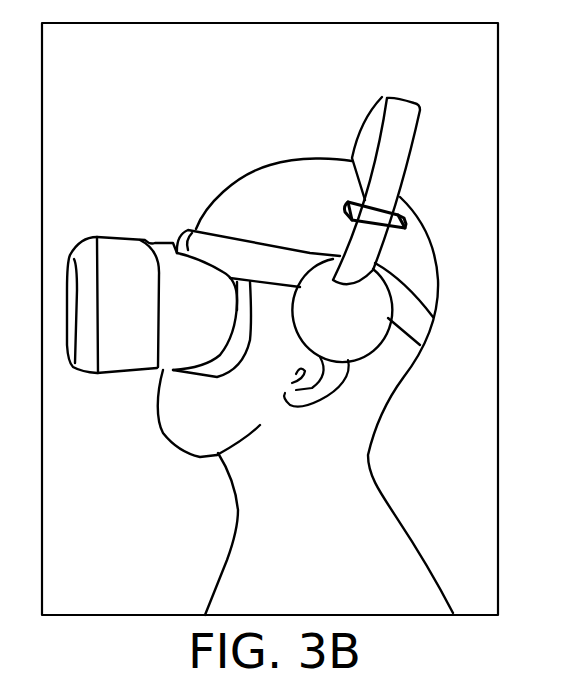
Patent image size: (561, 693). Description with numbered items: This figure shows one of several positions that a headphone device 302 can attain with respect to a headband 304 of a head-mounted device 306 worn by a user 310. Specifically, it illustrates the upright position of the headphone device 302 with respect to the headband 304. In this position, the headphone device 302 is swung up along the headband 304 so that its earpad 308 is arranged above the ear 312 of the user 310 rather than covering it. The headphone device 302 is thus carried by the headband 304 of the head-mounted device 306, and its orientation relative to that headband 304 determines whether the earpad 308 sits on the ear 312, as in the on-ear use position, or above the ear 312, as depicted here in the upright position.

The headphone device 302 is at (424, 91).
The headband 304 is at (429, 330).
The head-mounted device 306 is at (100, 215).
The earpad 308 is at (382, 353).
The user 310 is at (305, 367).
The ear 312 is at (365, 423).